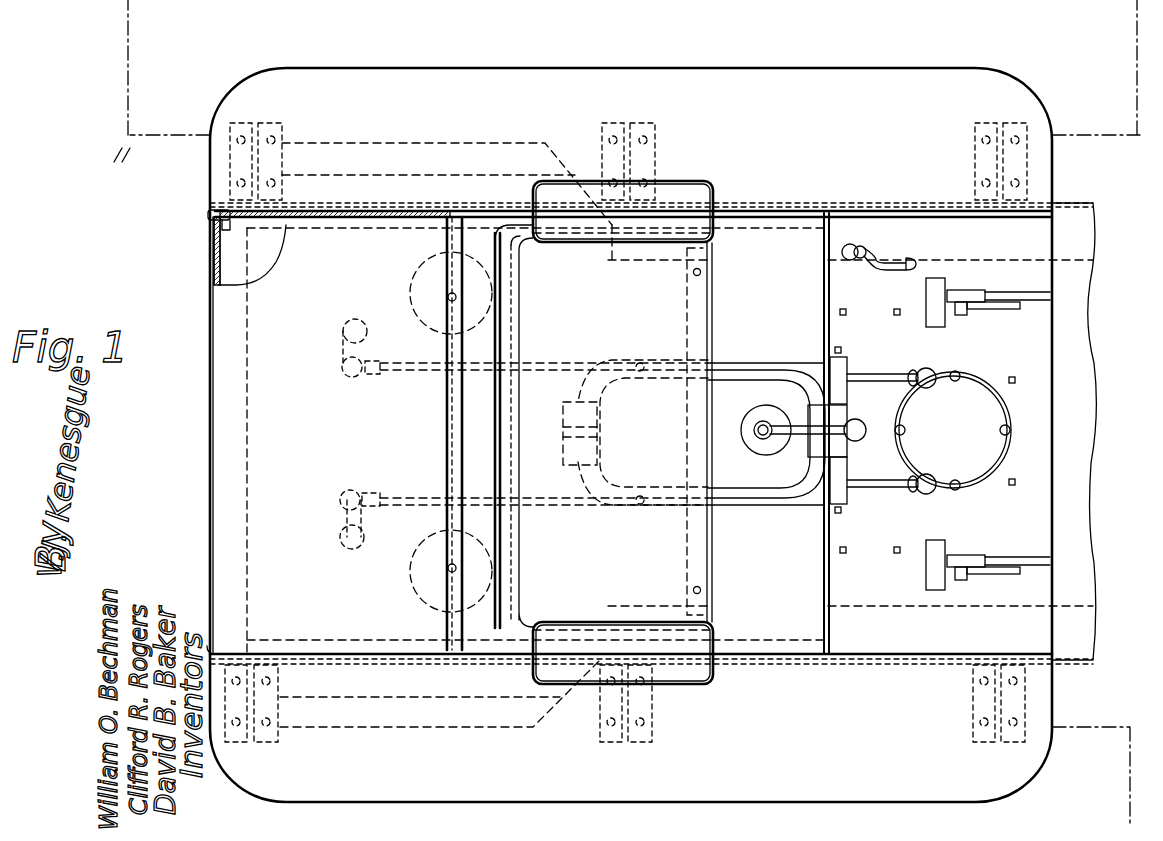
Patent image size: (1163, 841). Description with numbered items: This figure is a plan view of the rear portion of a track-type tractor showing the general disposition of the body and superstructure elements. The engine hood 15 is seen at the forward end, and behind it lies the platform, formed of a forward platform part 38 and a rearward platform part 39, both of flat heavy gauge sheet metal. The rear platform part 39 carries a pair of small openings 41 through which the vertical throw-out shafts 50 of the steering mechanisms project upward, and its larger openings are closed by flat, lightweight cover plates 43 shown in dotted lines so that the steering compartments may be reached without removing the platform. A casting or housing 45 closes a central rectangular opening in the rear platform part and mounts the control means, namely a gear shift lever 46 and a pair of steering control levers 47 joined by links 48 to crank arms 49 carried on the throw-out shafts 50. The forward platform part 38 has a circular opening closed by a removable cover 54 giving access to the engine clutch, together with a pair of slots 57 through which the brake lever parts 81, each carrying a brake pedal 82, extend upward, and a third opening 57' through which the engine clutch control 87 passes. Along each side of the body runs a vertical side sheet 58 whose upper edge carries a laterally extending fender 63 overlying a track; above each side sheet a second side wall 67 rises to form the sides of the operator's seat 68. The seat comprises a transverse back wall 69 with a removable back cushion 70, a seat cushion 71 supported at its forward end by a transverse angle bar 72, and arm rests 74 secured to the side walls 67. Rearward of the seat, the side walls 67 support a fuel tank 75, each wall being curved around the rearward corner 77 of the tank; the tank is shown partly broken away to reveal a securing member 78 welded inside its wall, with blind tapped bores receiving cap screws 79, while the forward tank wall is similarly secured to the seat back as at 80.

The engine hood 15 is at (1086, 228).
The forward platform part 38 is at (1036, 494).
The rearward platform part 39 is at (800, 656).
The small openings 41 is at (340, 325).
The cover plate 43 is at (421, 284).
The housing 45 is at (737, 388).
The gear shift lever 46 is at (861, 428).
The steering control levers 47 is at (906, 375).
The links 48 is at (799, 368).
The crank arms 49 is at (342, 351).
The vertical throw-out shafts 50 is at (355, 319).
The cover 54 is at (985, 400).
The openings or slots 57 is at (1052, 437).
The third opening 57' is at (935, 248).
The side sheet 58 is at (855, 203).
The fender 63 is at (1035, 112).
The side wall 67 is at (415, 213).
The operator's seat 68 is at (626, 432).
The back wall 69 is at (449, 454).
The back cushion 70 is at (512, 392).
The seat cushion 71 is at (705, 533).
The angle bar 72 is at (688, 292).
The arm rests 74 is at (690, 196).
The fuel tank 75 is at (236, 500).
The rearward corner 77 is at (210, 215).
The securing members 78 is at (228, 240).
The cap screws 79 is at (215, 212).
The securing of forward tank wall 80 is at (478, 297).
The brake lever part 81 is at (997, 306).
The brake pedal 82 is at (935, 305).
The engine clutch control 87 is at (853, 250).